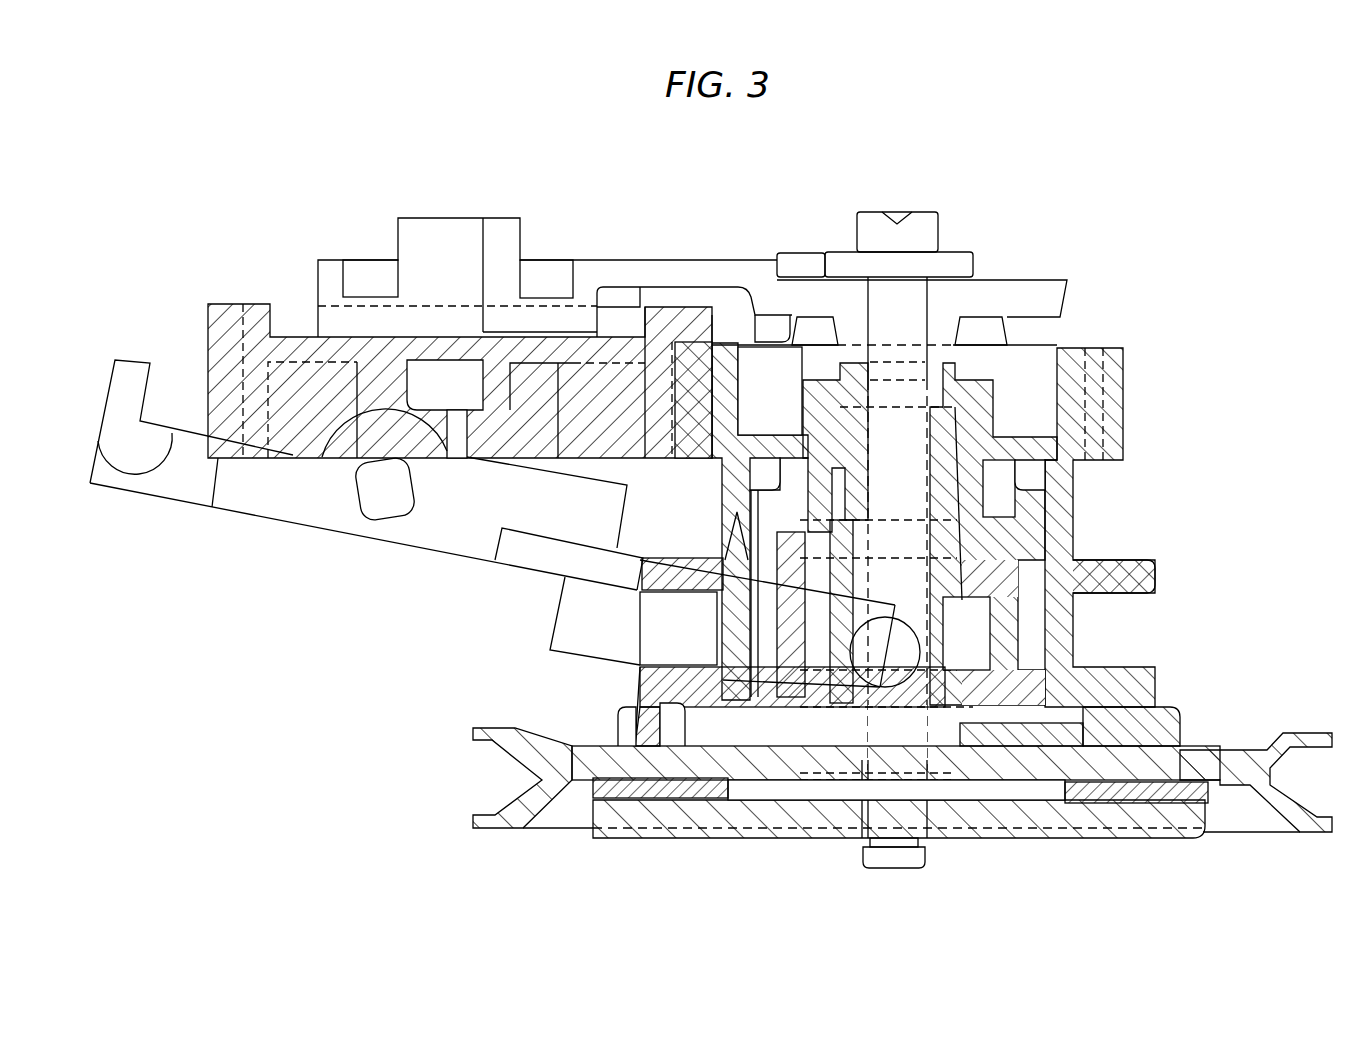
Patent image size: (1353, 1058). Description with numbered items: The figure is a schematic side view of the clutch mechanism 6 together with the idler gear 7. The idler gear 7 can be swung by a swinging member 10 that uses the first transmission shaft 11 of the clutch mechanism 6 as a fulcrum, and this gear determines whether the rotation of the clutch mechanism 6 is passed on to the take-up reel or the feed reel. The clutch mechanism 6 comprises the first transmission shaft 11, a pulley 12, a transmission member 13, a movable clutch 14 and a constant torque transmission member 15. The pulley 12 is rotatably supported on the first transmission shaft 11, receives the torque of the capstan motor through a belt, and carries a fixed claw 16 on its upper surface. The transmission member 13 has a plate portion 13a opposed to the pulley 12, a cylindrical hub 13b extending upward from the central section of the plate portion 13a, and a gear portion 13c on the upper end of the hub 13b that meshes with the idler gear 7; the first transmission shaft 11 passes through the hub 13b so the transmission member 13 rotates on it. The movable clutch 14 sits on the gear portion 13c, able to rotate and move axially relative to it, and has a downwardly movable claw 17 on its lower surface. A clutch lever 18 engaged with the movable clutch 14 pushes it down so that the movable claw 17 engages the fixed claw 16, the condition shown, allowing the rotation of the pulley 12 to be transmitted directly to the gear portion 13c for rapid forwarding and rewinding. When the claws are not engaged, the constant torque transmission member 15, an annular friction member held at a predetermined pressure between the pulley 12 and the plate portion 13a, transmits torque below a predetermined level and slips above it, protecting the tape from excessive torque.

The clutch mechanism 6 is at (1196, 312).
The idler gear 7 is at (218, 303).
The swinging member 10 is at (658, 260).
The first transmission shaft 11 is at (910, 317).
The pulley 12 is at (503, 828).
The transmission member 13 is at (1117, 422).
The plate portion 13a is at (690, 838).
The cylindrical hub 13b is at (947, 538).
The gear portion 13c is at (1117, 363).
The movable clutch 14 is at (1155, 577).
The constant torque transmission member 15 is at (642, 803).
The fixed claw 16 is at (618, 727).
The movable claw 17 is at (640, 697).
The clutch lever 18 is at (278, 522).